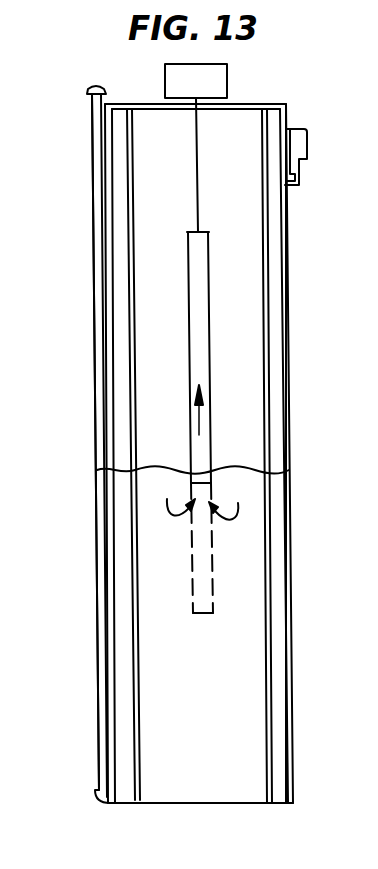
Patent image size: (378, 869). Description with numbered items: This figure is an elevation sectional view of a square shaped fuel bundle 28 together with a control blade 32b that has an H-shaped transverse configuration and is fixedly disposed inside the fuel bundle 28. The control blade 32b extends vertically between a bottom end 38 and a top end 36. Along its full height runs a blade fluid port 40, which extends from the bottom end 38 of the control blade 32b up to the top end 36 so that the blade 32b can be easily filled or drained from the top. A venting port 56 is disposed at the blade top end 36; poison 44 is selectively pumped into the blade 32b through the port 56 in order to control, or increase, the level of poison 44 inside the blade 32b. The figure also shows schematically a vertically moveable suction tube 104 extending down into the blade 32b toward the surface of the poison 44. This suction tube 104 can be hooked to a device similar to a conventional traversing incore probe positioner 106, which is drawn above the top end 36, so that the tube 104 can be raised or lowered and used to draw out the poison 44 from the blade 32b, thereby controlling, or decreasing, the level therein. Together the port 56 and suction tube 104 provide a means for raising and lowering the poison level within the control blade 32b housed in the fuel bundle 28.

The blade fluid port 40 is at (86, 93).
The traversing incore probe positioner 106 is at (165, 81).
The top end 36 is at (247, 105).
The venting port 56 is at (307, 129).
The fuel bundle 28 is at (95, 277).
The control blade 32b is at (132, 266).
The suction tube 104 is at (209, 357).
The poison 44 is at (228, 537).
The bottom end 38 is at (195, 804).